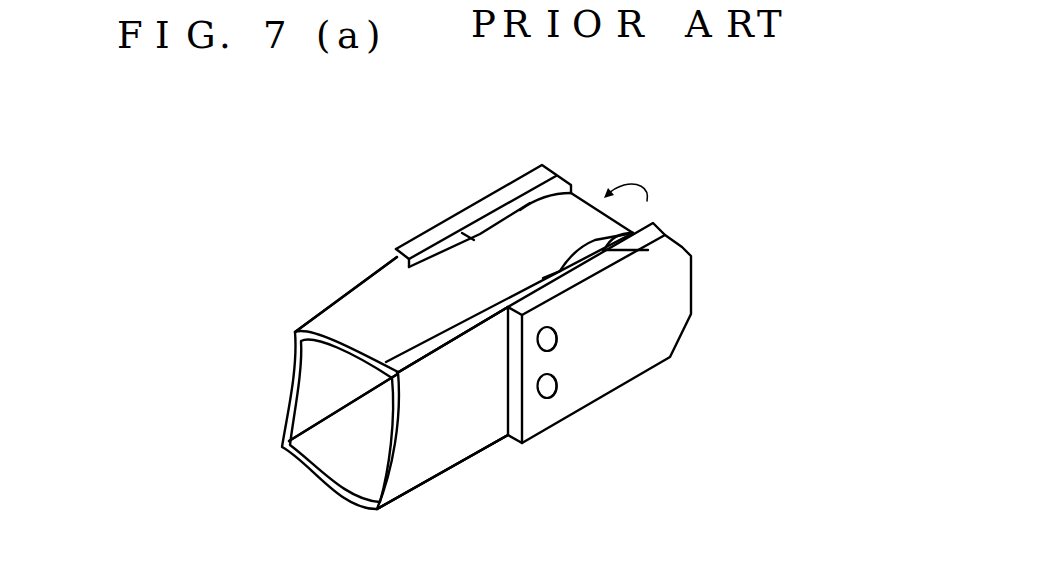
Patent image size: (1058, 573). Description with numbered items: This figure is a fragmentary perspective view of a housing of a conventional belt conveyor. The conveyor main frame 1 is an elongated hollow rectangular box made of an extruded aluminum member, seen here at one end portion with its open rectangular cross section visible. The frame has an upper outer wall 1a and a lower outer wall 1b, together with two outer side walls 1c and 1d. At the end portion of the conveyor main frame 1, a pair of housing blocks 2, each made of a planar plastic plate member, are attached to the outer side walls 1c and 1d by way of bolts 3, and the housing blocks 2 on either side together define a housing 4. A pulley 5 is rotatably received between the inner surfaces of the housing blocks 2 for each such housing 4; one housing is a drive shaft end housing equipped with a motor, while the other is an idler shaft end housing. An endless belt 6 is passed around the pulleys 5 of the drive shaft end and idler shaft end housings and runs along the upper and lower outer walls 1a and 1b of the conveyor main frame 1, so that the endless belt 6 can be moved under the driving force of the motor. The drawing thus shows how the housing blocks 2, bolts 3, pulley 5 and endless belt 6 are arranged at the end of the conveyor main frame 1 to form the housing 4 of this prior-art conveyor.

The conveyor main frame 1 is at (412, 469).
The upper outer wall 1a is at (332, 313).
The lower outer wall 1b is at (348, 464).
The outer side wall 1c is at (470, 431).
The outer side wall 1d is at (345, 391).
The housing block 2 is at (437, 226).
The bolt 3 is at (557, 348).
The housing 4 is at (594, 162).
The pulley 5 is at (606, 248).
The endless belt 6 is at (566, 219).